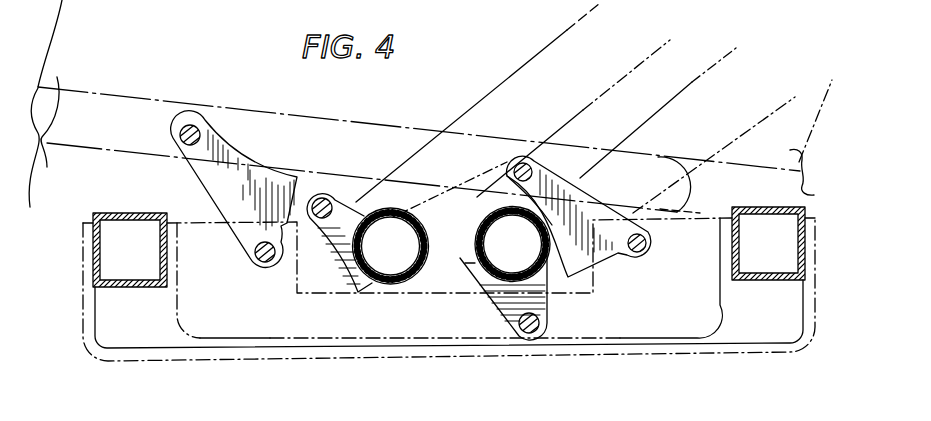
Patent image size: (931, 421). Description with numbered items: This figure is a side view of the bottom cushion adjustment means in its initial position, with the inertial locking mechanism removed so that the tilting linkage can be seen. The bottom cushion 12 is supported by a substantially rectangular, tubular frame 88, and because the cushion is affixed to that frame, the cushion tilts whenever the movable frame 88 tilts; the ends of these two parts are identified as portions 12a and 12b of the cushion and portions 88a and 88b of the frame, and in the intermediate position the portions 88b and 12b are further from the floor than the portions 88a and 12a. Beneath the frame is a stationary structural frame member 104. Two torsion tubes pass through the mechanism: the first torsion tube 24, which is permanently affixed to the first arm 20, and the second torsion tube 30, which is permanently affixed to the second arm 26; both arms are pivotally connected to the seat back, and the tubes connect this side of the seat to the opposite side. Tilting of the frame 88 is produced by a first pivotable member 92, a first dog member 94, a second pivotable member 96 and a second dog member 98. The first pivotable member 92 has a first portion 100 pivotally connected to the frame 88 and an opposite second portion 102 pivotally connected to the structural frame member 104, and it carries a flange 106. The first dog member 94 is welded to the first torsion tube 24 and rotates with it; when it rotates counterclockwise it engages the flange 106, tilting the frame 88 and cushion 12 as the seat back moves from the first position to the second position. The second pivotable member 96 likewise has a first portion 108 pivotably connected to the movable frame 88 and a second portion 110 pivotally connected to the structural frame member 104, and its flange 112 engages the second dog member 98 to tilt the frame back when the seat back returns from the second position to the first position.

The bottom cushion 12 is at (165, 40).
The portion of bottom cushion 12a is at (819, 142).
The portion of bottom cushion 12b is at (46, 147).
The first arm 20 is at (703, 105).
The torsion tube 24 is at (475, 240).
The second arm 26 is at (527, 78).
The second torsion tube 30 is at (393, 286).
The tubular frame 88 is at (118, 145).
The portion of frame 88a is at (682, 206).
The portion of frame 88b is at (40, 152).
The first pivotable member 92 is at (545, 172).
The first dog member 94 is at (515, 321).
The second pivotable member 96 is at (220, 198).
The second dog member 98 is at (327, 197).
The first portion 100 is at (512, 170).
The second portion 102 is at (654, 258).
The structural frame member 104 is at (207, 323).
The flange 106 is at (600, 277).
The first portion 108 is at (173, 127).
The second portion 110 is at (262, 262).
The flange 112 is at (306, 197).